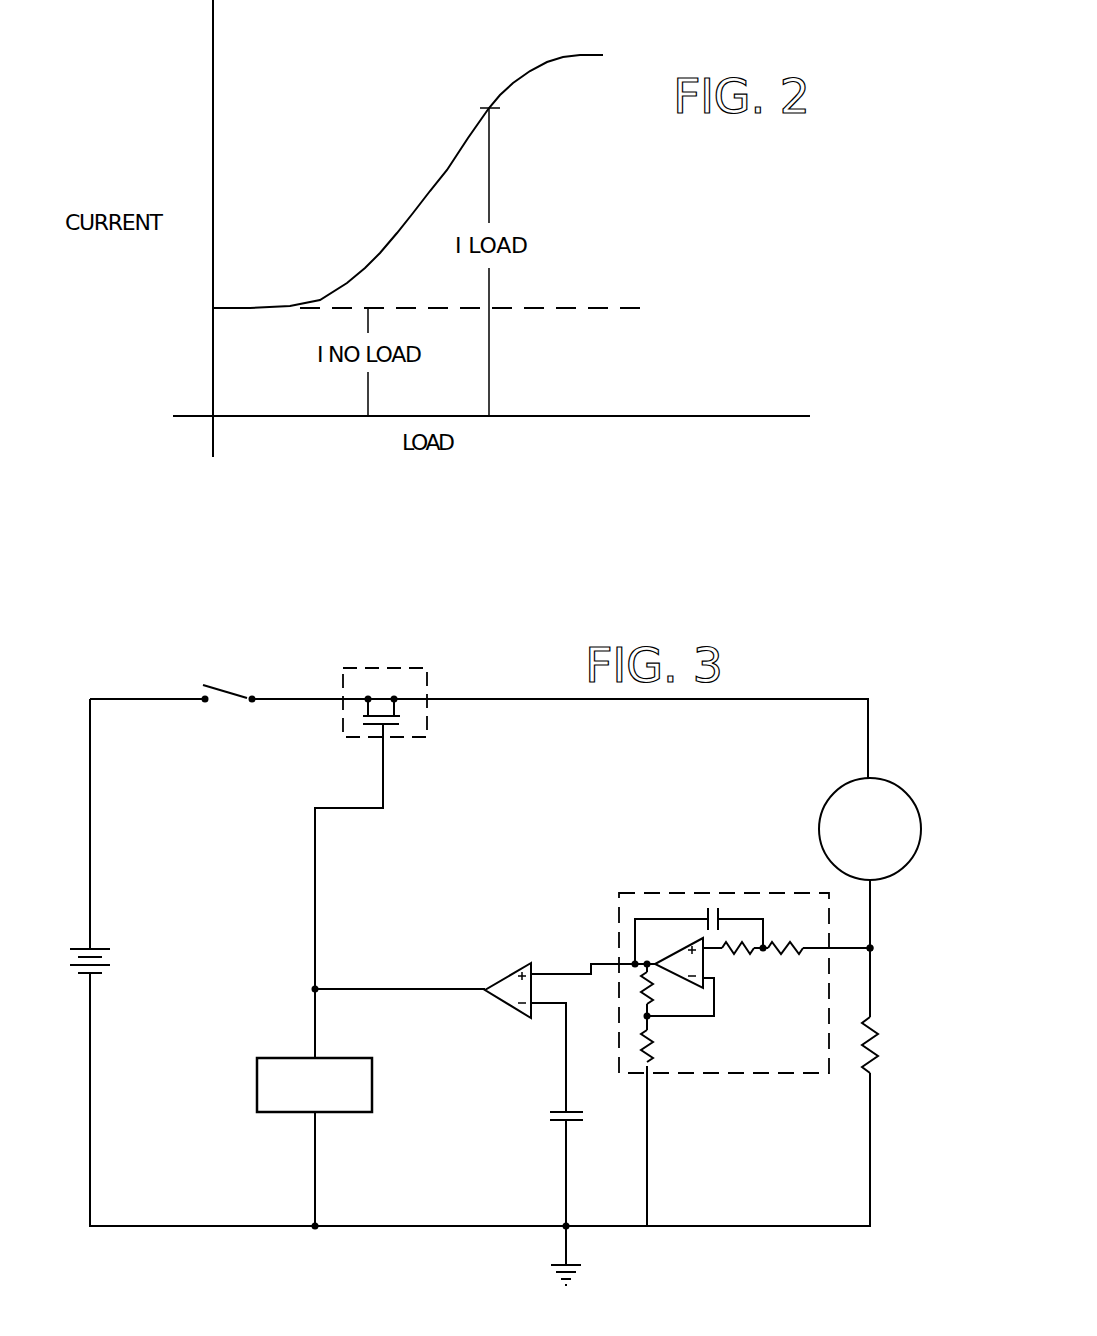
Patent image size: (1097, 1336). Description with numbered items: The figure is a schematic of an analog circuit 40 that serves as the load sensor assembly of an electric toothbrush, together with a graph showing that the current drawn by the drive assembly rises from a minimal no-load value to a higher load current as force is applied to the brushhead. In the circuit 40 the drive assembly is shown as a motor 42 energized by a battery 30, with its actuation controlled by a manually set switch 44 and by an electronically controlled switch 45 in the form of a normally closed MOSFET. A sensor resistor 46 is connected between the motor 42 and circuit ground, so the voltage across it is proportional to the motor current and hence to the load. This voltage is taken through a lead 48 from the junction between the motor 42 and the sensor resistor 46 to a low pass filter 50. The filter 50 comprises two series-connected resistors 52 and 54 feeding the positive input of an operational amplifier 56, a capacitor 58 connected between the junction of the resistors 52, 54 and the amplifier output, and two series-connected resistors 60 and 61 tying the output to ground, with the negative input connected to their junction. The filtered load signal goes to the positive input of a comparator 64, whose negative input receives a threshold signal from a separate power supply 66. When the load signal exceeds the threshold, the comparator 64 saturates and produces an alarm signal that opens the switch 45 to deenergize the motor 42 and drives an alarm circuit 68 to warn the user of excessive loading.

The battery 30 is at (105, 968).
The analog circuit 40 is at (827, 686).
The motor 42 is at (907, 866).
The manually set switch 44 is at (221, 704).
The electronically controlled switch 45 is at (427, 676).
The sensor resistor 46 is at (884, 1041).
The lead 48 is at (857, 950).
The low pass filter 50 is at (619, 898).
The resistor 52 is at (786, 940).
The resistor 54 is at (742, 952).
The operational amplifier 56 is at (678, 950).
The capacitor 58 is at (706, 910).
The resistor 60 is at (652, 990).
The resistor 61 is at (652, 1050).
The comparator 64 is at (500, 978).
The power supply 66 is at (560, 1125).
The alarm circuit 68 is at (373, 1100).